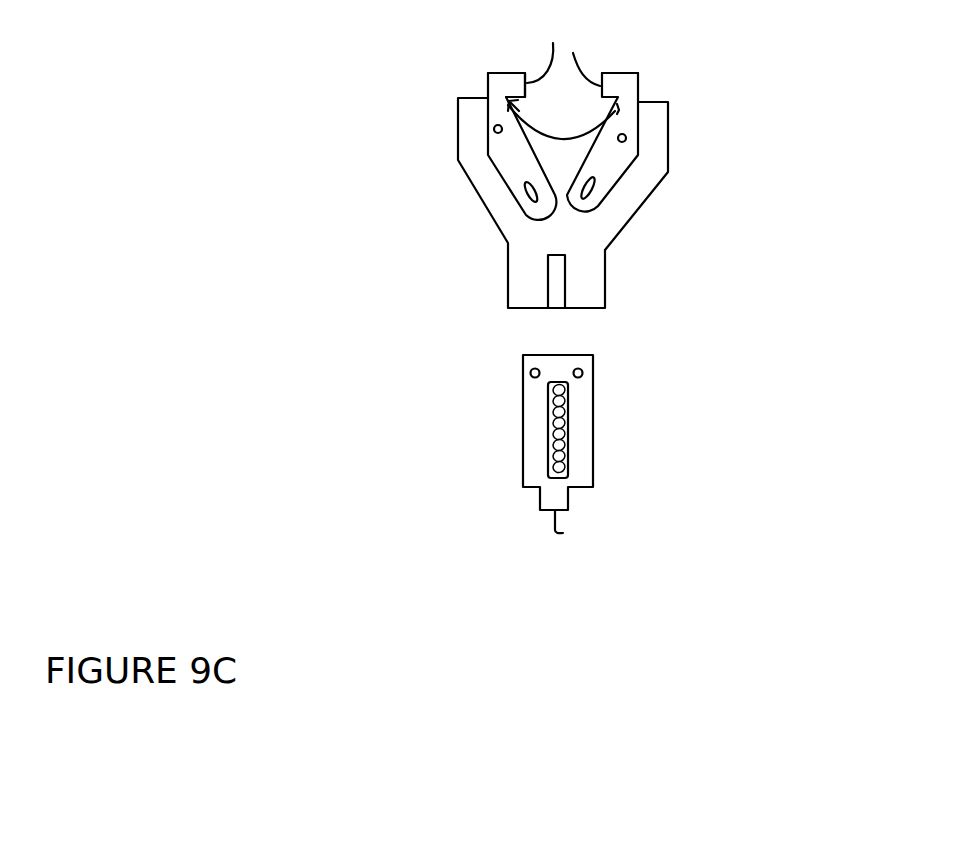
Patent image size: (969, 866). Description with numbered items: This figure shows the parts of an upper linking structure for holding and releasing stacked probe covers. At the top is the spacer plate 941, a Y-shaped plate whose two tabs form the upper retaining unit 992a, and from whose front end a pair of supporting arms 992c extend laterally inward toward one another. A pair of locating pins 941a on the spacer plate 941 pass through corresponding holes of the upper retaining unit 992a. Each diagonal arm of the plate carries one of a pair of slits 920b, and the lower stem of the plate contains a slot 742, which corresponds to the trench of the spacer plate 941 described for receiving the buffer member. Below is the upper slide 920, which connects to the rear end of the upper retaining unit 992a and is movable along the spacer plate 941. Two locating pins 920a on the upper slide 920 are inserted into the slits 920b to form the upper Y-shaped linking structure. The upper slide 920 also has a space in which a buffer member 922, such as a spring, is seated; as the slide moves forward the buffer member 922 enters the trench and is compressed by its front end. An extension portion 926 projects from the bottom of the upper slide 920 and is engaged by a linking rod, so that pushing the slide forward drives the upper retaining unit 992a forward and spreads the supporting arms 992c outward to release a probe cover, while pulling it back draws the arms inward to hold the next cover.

The spacer plate 941 is at (676, 146).
The upper retaining unit 992a is at (508, 72).
The supporting arms 992c is at (563, 78).
The locating pins 941a is at (493, 131).
The slits 920b is at (522, 193).
The stem slot 742 is at (544, 286).
The upper slide 920 is at (604, 440).
The locating pins 920a is at (527, 373).
The buffer member 922 is at (547, 436).
The extension portion 926 is at (580, 545).